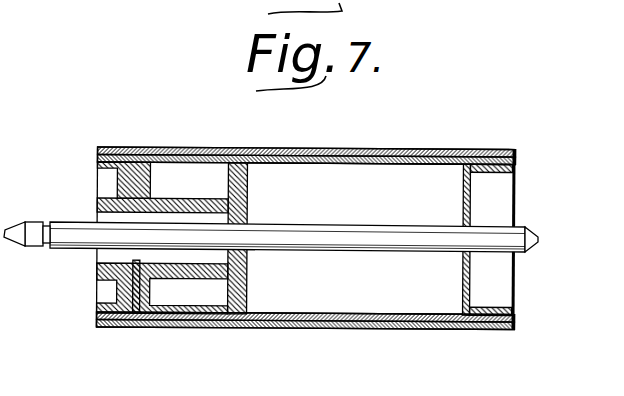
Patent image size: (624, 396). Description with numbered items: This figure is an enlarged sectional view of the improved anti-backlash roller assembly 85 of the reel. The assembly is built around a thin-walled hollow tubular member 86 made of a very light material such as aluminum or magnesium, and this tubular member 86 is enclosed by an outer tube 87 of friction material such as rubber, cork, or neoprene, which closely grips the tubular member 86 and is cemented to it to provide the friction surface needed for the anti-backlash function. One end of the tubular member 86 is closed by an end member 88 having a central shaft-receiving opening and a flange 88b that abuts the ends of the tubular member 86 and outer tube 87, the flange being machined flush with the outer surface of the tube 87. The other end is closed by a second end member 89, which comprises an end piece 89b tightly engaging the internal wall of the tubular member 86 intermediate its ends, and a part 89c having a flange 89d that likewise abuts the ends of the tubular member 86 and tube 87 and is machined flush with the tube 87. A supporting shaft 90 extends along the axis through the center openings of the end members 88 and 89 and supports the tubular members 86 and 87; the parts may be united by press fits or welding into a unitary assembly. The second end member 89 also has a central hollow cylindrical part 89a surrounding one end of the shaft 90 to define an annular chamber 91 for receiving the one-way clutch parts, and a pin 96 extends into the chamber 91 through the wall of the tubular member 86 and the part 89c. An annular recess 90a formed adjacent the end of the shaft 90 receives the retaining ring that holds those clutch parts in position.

The anti-backlash roller assembly 85 is at (352, 328).
The hollow tubular member 86 is at (402, 165).
The outer tube 87 is at (321, 149).
The end member 88 is at (470, 207).
The flange 88b is at (513, 150).
The second end member 89 is at (251, 199).
The central hollow cylindrical part 89a is at (192, 277).
The end piece 89b is at (250, 276).
The part 89c is at (112, 178).
The flange 89d is at (99, 147).
The supporting shaft 90 is at (390, 229).
The annular recess 90a is at (48, 224).
The annular chamber 91 is at (185, 216).
The pin 96 is at (133, 261).